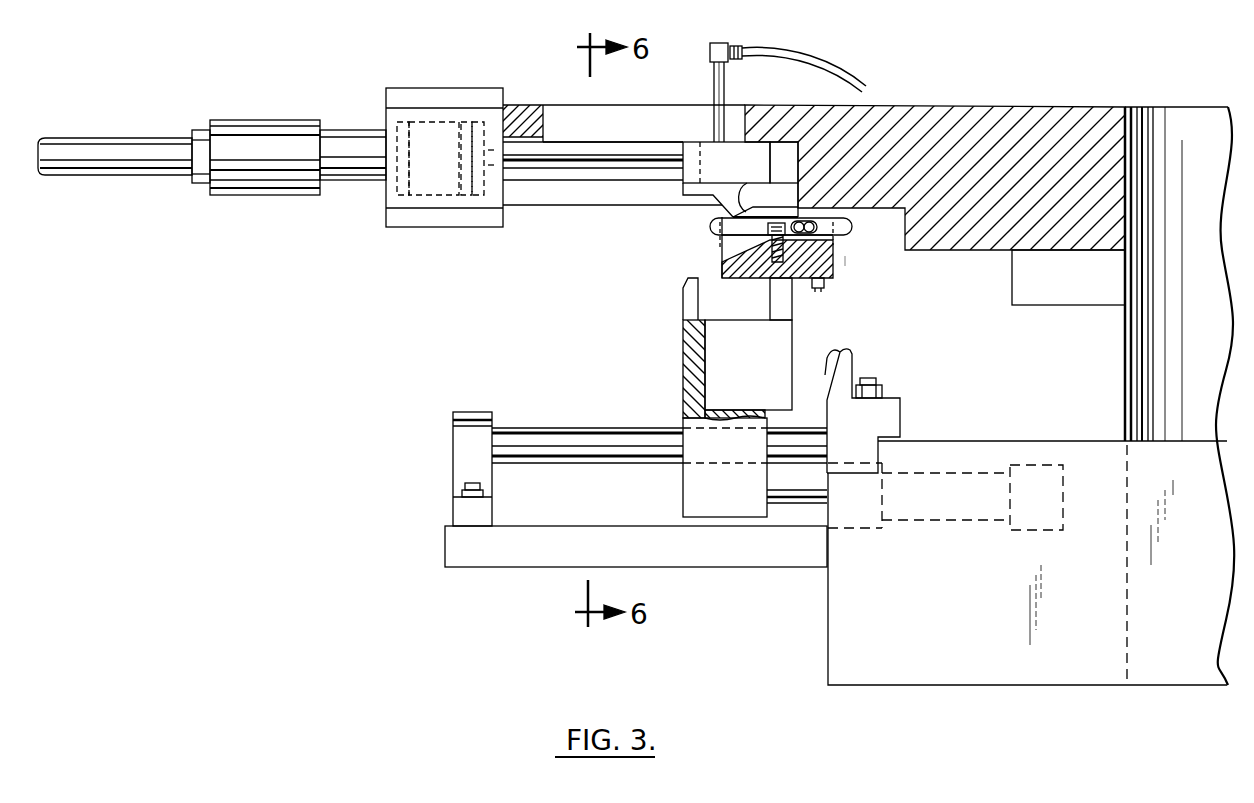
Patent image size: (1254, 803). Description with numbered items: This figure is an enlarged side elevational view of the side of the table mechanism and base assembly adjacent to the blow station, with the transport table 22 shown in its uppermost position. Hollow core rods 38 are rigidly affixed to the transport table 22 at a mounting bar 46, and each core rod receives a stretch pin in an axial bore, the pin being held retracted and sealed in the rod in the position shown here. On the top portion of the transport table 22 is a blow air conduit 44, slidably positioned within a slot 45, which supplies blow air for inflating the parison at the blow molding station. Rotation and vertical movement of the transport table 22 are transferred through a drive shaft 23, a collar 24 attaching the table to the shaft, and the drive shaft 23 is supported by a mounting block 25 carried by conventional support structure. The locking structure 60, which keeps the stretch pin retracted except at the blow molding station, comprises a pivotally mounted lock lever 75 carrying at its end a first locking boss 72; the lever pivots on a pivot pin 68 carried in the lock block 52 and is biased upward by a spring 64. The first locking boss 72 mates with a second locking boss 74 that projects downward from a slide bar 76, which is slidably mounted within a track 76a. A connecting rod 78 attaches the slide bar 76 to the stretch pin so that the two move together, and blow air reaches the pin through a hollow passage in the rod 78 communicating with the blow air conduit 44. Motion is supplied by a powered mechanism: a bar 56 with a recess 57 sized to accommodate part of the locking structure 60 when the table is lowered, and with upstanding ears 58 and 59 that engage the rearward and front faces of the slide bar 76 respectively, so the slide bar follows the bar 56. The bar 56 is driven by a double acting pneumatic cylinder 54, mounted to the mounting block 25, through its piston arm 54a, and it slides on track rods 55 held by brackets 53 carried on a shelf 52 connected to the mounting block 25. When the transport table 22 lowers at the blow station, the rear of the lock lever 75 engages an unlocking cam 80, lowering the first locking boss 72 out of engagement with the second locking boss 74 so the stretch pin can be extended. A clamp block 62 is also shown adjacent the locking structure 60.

The transport table 22 is at (1006, 105).
The drive shaft 23 is at (1186, 300).
The collar 24 is at (1059, 296).
The mounting block 25 is at (984, 636).
The hollow core rod 38 is at (124, 151).
The blow air conduit 44 is at (815, 64).
The slot 45 is at (645, 126).
The mounting bar 46 is at (421, 213).
The shelf 52 is at (686, 553).
The bracket 53 is at (465, 412).
The double acting pneumatic cylinder 54 is at (927, 503).
The piston arm 54a is at (803, 493).
The track rod 55 is at (577, 442).
The bar 56 is at (797, 346).
The recess 57 is at (756, 378).
The ear 58 is at (790, 300).
The ear 59 is at (684, 302).
The locking structure 60 is at (872, 263).
The clamp block 62 is at (836, 270).
The spring 64 is at (764, 268).
The pivot pin 68 is at (820, 224).
The first locking boss 72 is at (728, 211).
The second locking boss 74 is at (745, 185).
The lock lever 75 is at (745, 232).
The slide bar 76 is at (756, 170).
The track 76a is at (552, 152).
The connecting rod 78 is at (568, 166).
The unlocking cam 80 is at (853, 350).